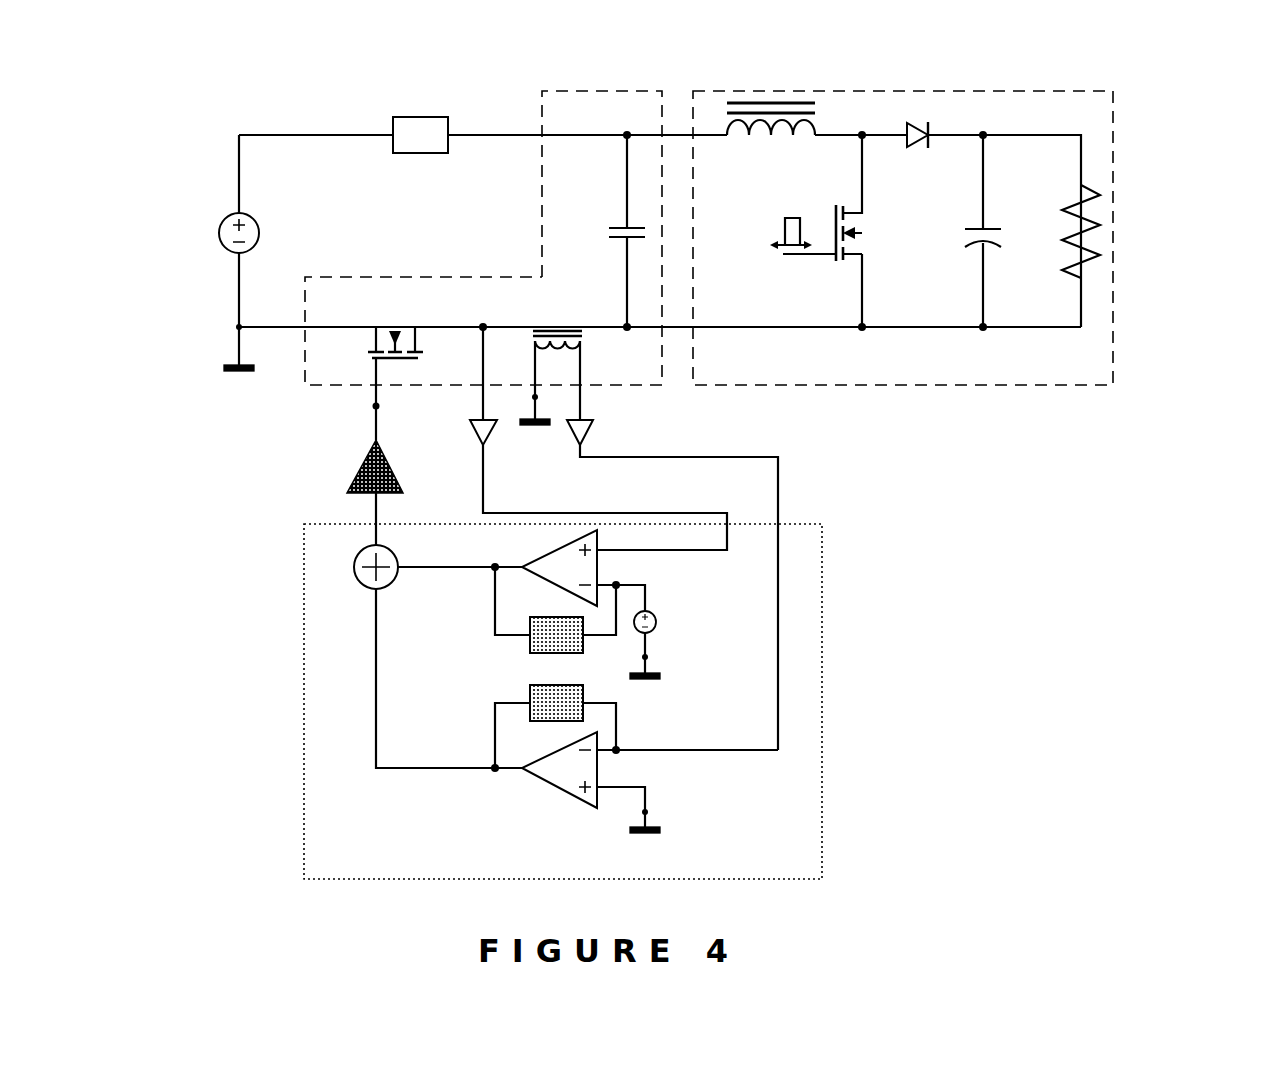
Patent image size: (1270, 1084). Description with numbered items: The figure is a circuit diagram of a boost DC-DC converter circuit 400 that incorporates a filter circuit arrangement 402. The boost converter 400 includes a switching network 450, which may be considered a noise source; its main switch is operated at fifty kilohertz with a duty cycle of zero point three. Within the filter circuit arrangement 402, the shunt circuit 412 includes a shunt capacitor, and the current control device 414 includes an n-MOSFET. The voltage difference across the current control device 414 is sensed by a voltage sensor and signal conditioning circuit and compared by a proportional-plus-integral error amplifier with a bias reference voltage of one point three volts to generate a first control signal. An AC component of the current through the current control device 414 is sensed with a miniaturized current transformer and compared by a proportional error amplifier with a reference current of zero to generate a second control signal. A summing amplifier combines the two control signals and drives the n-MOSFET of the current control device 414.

The boost DC-DC converter circuit 400 is at (1148, 98).
The filter circuit arrangement 402 is at (597, 90).
The shunt circuit 412 is at (601, 224).
The current control device 414 is at (407, 290).
The switching network 450 is at (925, 92).